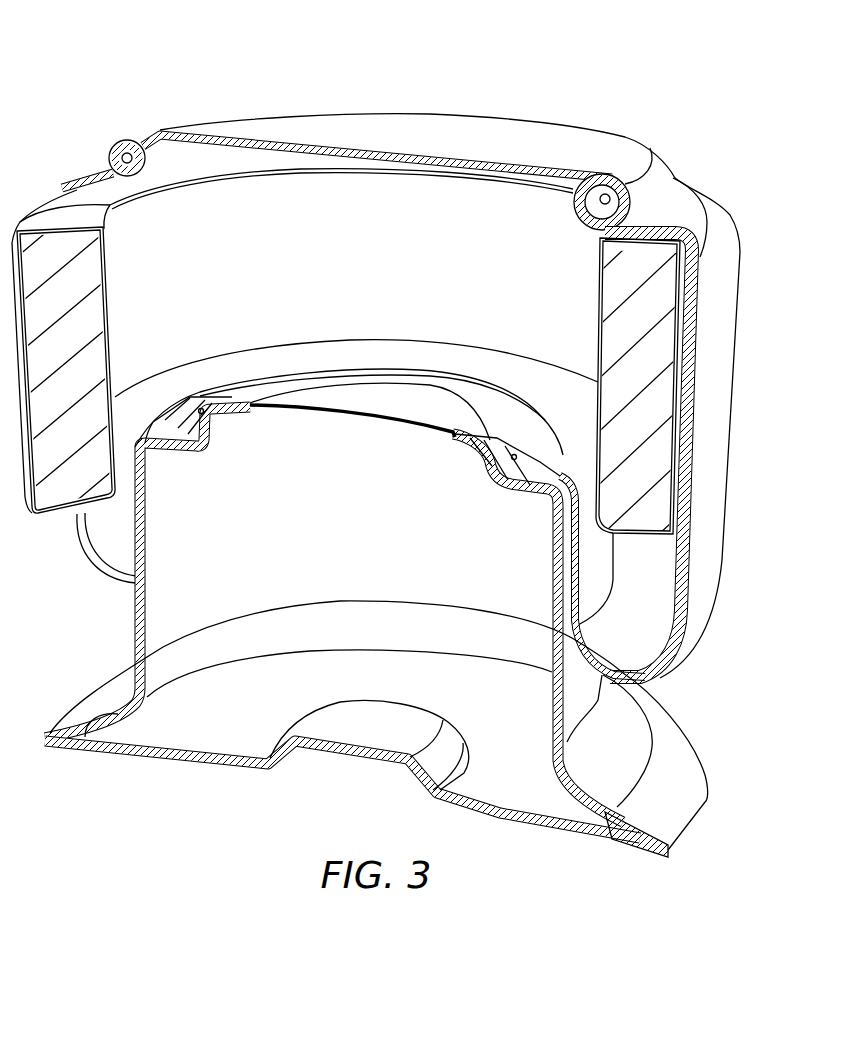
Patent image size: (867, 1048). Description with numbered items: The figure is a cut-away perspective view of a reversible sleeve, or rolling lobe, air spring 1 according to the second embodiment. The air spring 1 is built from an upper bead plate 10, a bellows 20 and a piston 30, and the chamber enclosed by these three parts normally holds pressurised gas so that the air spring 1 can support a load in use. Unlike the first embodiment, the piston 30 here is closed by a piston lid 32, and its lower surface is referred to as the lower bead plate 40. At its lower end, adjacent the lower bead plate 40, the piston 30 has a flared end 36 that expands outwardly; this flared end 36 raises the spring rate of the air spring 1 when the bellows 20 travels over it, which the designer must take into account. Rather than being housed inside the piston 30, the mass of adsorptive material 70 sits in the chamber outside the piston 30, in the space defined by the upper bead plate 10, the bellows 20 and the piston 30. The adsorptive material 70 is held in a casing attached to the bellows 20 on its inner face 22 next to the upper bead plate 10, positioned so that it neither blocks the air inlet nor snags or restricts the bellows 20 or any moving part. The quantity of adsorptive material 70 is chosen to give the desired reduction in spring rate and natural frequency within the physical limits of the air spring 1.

The air spring 1 is at (126, 62).
The upper bead plate 10 is at (468, 131).
The bellows 20 is at (692, 650).
The inner face 22 is at (685, 494).
The piston 30 is at (140, 608).
The piston lid 32 is at (351, 410).
The flared end 36 is at (690, 747).
The lower bead plate 40 is at (166, 758).
The adsorptive material 70 is at (93, 312).